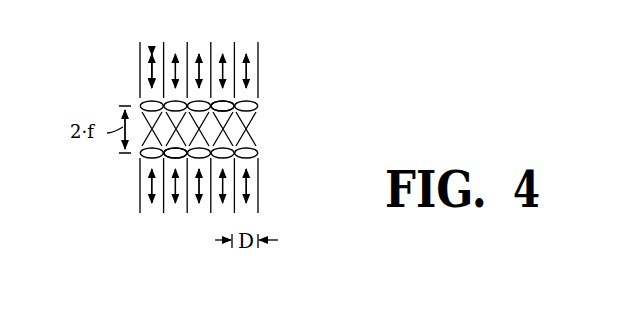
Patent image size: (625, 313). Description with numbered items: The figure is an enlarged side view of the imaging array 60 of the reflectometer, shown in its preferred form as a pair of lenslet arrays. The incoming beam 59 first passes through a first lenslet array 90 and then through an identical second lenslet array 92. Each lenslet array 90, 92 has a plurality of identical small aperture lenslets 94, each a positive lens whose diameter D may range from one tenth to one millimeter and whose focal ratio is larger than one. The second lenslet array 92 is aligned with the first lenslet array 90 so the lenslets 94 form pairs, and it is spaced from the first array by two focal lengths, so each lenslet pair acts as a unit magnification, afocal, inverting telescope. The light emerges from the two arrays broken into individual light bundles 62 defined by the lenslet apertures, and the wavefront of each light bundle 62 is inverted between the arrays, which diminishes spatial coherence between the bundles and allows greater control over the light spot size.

The imaging array 60 is at (90, 83).
The beam 59 is at (152, 68).
The individual light bundles 62 is at (156, 190).
The first lenslet array 90 is at (262, 107).
The second lenslet array 92 is at (262, 153).
The lenslets 94 is at (223, 101).